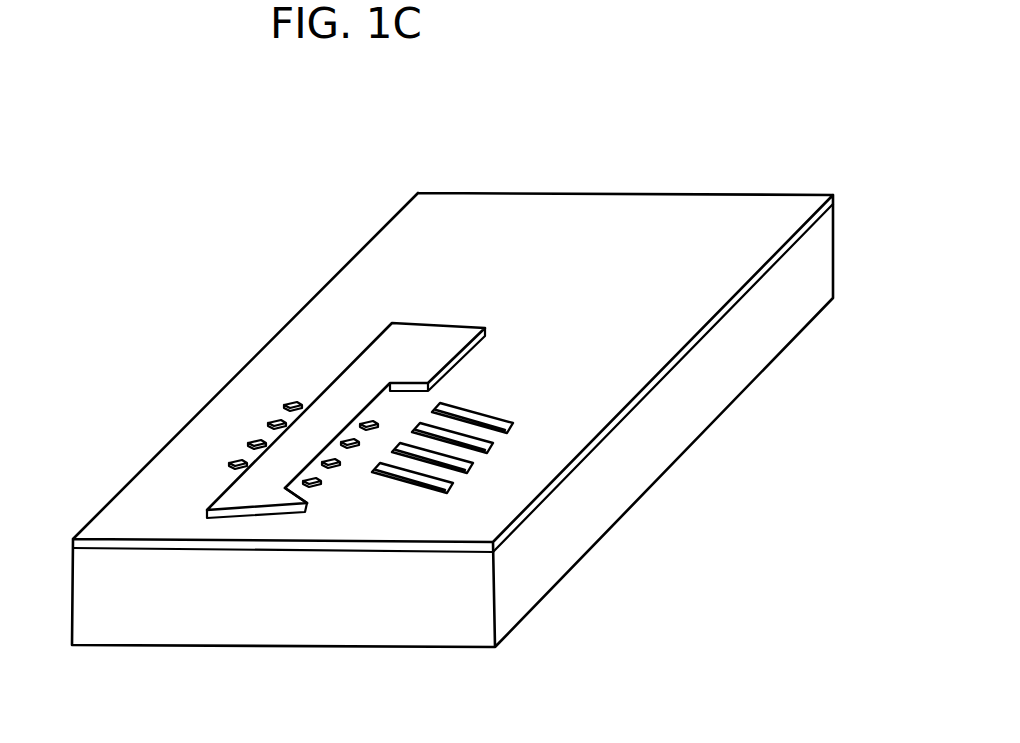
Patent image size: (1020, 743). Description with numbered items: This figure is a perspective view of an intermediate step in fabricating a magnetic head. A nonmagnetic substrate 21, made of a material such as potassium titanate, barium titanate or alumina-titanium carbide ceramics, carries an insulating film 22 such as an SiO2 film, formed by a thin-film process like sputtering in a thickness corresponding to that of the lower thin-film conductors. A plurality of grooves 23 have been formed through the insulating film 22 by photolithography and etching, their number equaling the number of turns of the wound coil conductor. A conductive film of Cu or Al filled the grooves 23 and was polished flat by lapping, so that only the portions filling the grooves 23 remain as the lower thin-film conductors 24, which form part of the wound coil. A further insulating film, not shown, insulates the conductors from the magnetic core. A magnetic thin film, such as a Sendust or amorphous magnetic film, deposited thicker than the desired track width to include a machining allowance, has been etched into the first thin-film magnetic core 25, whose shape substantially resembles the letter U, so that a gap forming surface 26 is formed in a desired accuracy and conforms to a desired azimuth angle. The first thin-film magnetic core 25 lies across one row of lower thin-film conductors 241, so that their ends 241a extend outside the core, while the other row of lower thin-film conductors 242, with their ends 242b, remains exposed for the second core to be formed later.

The substrate 21 is at (651, 466).
The insulating film 22 is at (75, 548).
The grooves 23 is at (489, 447).
The lower thin-film conductors 24 is at (255, 443).
The lower thin-film conductors of one row 241 is at (116, 368).
The end of lower thin-film conductor 241a is at (275, 423).
The lower thin-film conductors of the other row 242 is at (634, 352).
The end of lower thin-film conductor 242b is at (372, 424).
The first thin-film magnetic core 25 is at (370, 355).
The gap forming surface 26 is at (307, 503).